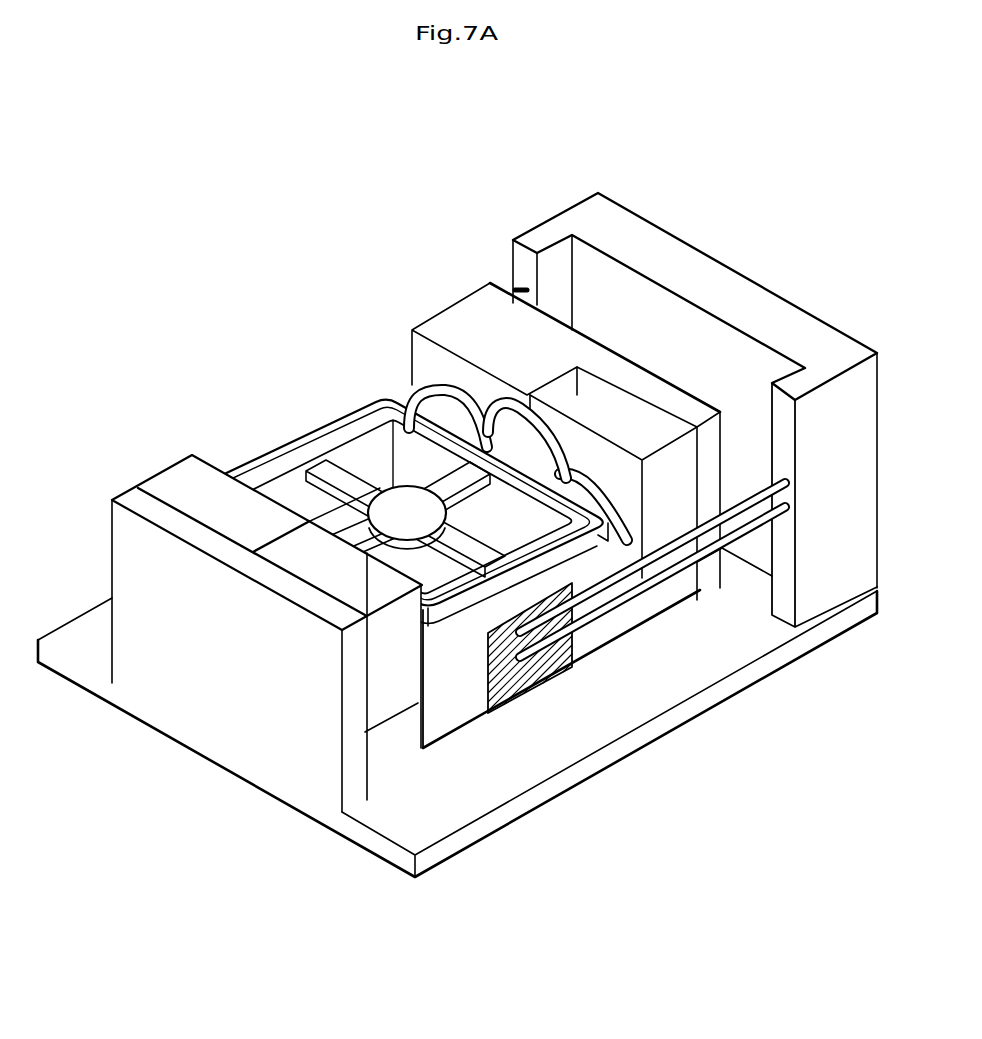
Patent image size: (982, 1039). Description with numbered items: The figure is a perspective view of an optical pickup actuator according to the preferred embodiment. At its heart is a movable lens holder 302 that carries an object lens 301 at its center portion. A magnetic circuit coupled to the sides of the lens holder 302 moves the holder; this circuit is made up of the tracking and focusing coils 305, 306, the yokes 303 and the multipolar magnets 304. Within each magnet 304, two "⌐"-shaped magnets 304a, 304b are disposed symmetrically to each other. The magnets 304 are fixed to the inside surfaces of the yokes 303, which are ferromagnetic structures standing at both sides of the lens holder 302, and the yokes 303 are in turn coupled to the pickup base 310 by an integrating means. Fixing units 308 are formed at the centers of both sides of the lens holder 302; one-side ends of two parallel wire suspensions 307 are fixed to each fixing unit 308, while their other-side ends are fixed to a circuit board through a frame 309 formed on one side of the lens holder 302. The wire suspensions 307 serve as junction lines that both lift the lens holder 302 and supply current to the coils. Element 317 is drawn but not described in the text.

The object lens 301 is at (405, 514).
The lens holder 302 is at (375, 448).
The yokes 303 is at (676, 397).
The multipolar magnets 304 is at (553, 368).
The "⌐"-shaped magnet 304a is at (460, 323).
The "⌐"-shaped magnet 304b is at (613, 408).
The tracking coil 305 is at (415, 395).
The focusing coil 306 is at (518, 415).
The wire suspensions 307 is at (735, 535).
The fixing units 308 is at (503, 673).
The frame 309 is at (625, 225).
The pickup base 310 is at (623, 718).
The frame 317 is at (303, 440).